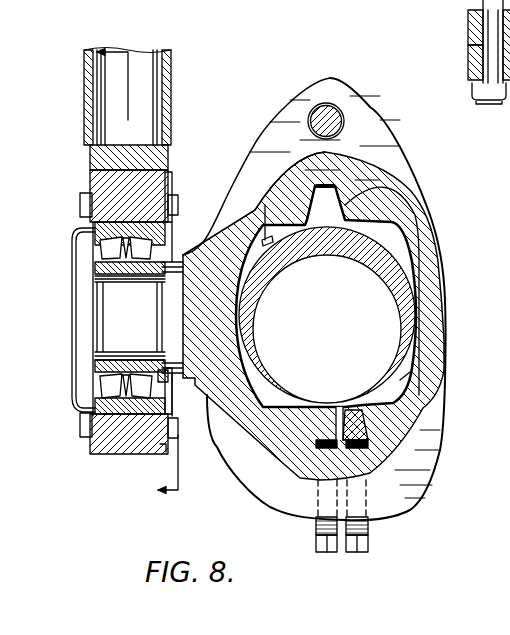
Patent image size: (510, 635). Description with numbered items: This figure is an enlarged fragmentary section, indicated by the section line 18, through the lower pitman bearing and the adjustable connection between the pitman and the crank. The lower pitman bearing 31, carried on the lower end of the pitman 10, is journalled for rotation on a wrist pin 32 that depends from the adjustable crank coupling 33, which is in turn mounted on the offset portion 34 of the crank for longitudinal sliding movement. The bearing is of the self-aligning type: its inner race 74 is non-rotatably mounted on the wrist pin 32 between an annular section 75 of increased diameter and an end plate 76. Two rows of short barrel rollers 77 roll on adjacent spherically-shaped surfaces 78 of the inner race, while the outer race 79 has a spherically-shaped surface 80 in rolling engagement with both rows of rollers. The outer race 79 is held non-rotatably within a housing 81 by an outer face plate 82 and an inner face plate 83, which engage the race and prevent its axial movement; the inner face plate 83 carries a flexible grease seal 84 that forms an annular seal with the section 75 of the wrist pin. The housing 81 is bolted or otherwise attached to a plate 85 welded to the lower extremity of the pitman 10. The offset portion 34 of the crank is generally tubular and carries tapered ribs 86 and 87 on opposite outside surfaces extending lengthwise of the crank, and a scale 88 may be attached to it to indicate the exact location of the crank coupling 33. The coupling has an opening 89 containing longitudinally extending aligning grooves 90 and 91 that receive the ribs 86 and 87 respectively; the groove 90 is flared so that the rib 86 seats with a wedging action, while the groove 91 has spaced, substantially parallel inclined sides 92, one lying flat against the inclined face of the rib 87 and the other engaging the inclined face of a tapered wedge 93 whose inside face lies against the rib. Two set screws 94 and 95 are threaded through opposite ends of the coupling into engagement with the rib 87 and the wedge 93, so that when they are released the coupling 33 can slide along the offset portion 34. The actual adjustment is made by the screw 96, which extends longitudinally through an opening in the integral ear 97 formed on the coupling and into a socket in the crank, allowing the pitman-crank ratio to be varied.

The pitman 10 is at (168, 70).
The section line 18 is at (139, 264).
The lower pitman bearing 31 is at (122, 446).
The wrist pin 32 is at (129, 319).
The crank coupling 33 is at (405, 203).
The offset portion 34 is at (410, 277).
The inner race 74 is at (128, 365).
The annular section 75 is at (173, 265).
The end plate 76 is at (95, 378).
The barrel rollers 77 is at (160, 383).
The spherically-shaped surfaces 78 is at (125, 265).
The outer race 79 is at (170, 188).
The spherically-shaped surface 80 is at (152, 228).
The housing 81 is at (110, 182).
The outer face plate 82 is at (74, 243).
The inner face plate 83 is at (156, 448).
The flexible grease seal 84 is at (175, 432).
The plate 85 is at (160, 156).
The tapered rib 86 is at (387, 167).
The tapered rib 87 is at (325, 418).
The scale 88 is at (265, 205).
The opening 89 is at (408, 373).
The aligning groove 90 is at (332, 200).
The aligning groove 91 is at (298, 445).
The sides 92 is at (407, 421).
The tapered wedge 93 is at (415, 434).
The set screw 94 is at (324, 552).
The set screw 95 is at (369, 545).
The screw 96 is at (337, 105).
The integral ear 97 is at (308, 88).